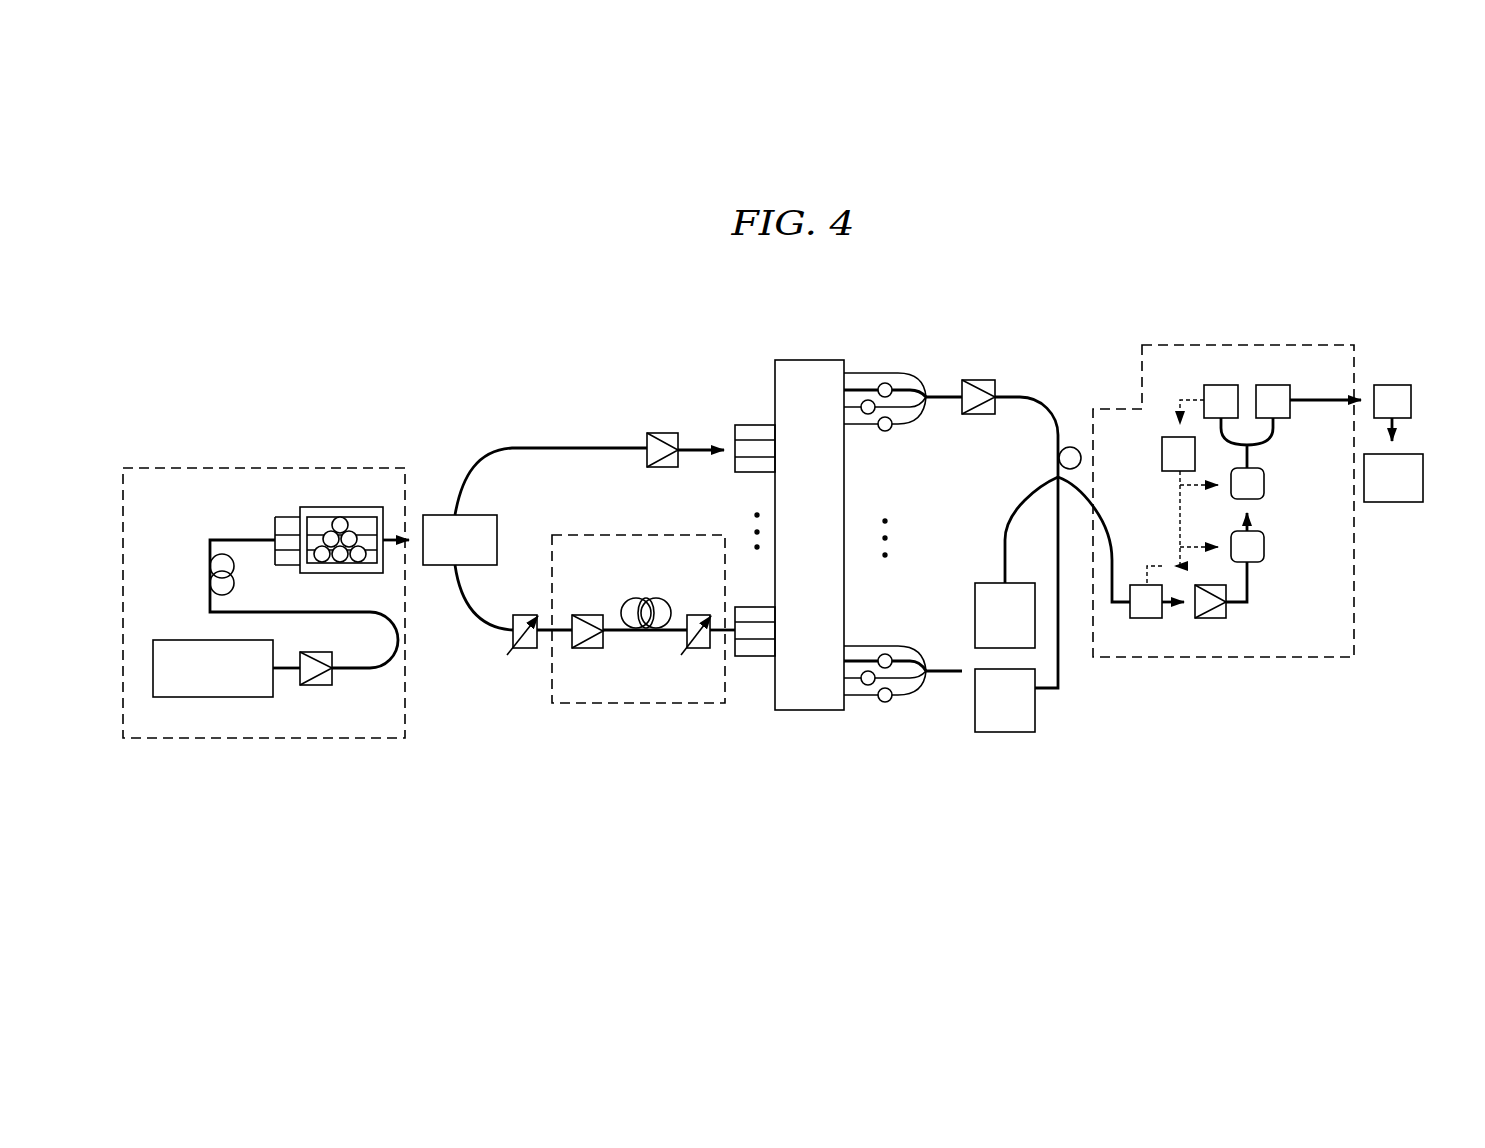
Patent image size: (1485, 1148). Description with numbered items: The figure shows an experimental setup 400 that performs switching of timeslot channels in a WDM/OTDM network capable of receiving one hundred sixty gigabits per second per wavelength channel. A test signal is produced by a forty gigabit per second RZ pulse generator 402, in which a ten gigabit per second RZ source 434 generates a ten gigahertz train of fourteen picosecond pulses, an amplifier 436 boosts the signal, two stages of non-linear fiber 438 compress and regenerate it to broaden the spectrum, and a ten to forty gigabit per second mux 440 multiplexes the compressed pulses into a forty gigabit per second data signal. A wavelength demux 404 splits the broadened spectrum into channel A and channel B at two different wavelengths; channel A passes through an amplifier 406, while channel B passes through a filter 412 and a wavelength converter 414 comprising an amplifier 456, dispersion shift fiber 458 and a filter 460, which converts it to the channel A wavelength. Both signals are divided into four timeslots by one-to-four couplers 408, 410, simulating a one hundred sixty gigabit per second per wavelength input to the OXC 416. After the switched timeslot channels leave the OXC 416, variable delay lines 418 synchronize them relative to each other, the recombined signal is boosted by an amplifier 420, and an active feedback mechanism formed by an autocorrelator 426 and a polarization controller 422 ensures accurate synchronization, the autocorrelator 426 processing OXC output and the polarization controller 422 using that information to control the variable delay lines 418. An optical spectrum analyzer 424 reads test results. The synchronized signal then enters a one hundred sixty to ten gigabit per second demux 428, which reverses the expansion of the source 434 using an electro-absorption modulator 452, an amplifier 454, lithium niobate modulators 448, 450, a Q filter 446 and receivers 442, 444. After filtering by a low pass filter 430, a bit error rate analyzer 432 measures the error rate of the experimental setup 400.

The experimental setup 400 is at (1056, 289).
The 40 Gbit/s RZ pulse generator 402 is at (260, 468).
The wavelength demux 404 is at (440, 515).
The amplifier 406 is at (661, 433).
The 1:4 coupler 408 is at (756, 425).
The 1:4 coupler 410 is at (757, 607).
The filter 412 is at (525, 615).
The wavelength converter 414 is at (645, 535).
The OXC 416 is at (805, 360).
The variable delay lines 418 is at (905, 372).
The amplifier 420 is at (976, 380).
The polarization controller 422 is at (1068, 446).
The optical spectrum analyzer 424 is at (975, 620).
The autocorrelator 426 is at (975, 703).
The 160 to 10 Gb/s demux 428 is at (1238, 345).
The filter 430 is at (1411, 400).
The bit error rate analyzer 432 is at (1423, 478).
The 10 Gbit/s RZ source 434 is at (210, 698).
The amplifier 436 is at (318, 652).
The non-linear fiber 438 is at (232, 592).
The 10 to 40 Gbit/s mux 440 is at (315, 507).
The receiver 442 is at (1204, 392).
The receiver 444 is at (1290, 392).
The Q filter 446 is at (1162, 445).
The LiNbO3 modulator 448 is at (1264, 482).
The LiNbO3 modulator 450 is at (1264, 546).
The electro-absorption modulator 452 is at (1162, 612).
The amplifier 454 is at (1228, 612).
The amplifier 456 is at (588, 648).
The dispersion shift fiber 458 is at (626, 604).
The filter 460 is at (700, 615).